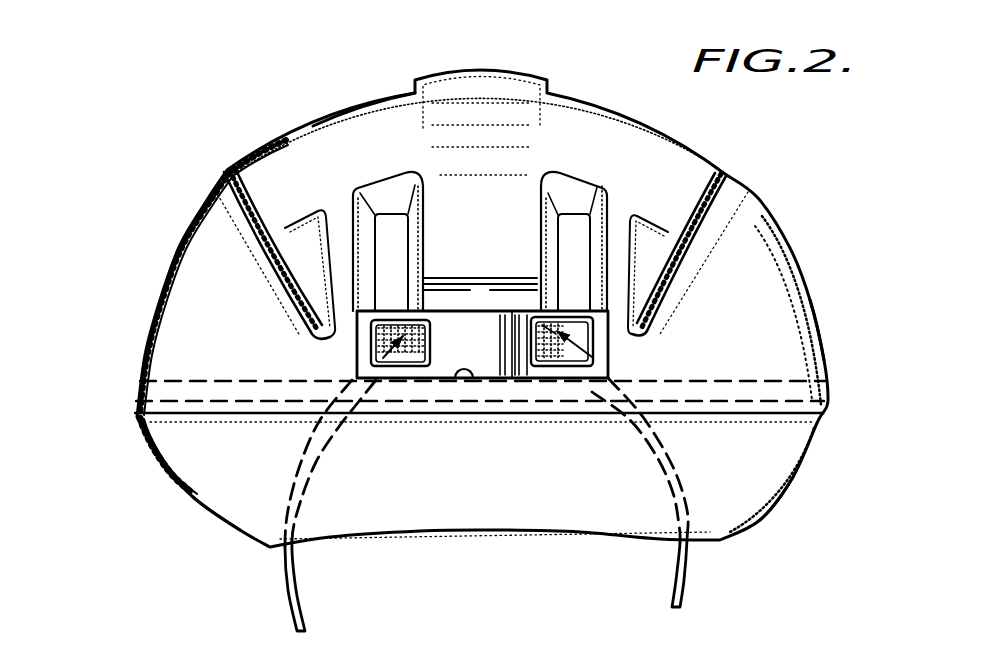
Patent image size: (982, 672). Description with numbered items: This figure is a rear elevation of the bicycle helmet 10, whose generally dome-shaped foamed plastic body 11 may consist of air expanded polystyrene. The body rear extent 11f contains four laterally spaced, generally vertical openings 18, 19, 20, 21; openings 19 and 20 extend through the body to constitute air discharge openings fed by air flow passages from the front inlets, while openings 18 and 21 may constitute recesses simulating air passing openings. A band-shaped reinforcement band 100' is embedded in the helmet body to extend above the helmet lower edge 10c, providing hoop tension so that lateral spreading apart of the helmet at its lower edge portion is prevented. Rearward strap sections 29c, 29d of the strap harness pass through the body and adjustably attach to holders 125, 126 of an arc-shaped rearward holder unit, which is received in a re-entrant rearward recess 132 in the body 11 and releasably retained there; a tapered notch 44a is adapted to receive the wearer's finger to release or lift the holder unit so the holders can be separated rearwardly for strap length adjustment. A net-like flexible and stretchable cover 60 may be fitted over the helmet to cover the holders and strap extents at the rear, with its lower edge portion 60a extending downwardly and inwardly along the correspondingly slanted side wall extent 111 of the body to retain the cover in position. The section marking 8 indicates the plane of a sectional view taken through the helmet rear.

The bicycle helmet 10 is at (618, 84).
The helmet lower edge 10c is at (787, 480).
The foamed plastic body 11 is at (314, 121).
The body rear extent 11f is at (485, 195).
The rear opening 18 is at (645, 242).
The air discharge opening 19 is at (581, 220).
The air discharge opening 20 is at (377, 220).
The rear opening 21 is at (295, 250).
The tapered notch 44a is at (482, 296).
The net-like cover 60 is at (165, 262).
The cover lower edge portion 60a is at (157, 458).
The reinforcement band 100' is at (843, 330).
The slanted side wall extent 111 is at (203, 507).
The holder 125 is at (371, 358).
The holder 126 is at (592, 352).
The re-entrant rearward recess 132 is at (466, 378).
The strap section 29c is at (384, 362).
The strap section 29d is at (562, 364).
The section line 8- 8 is at (225, 347).